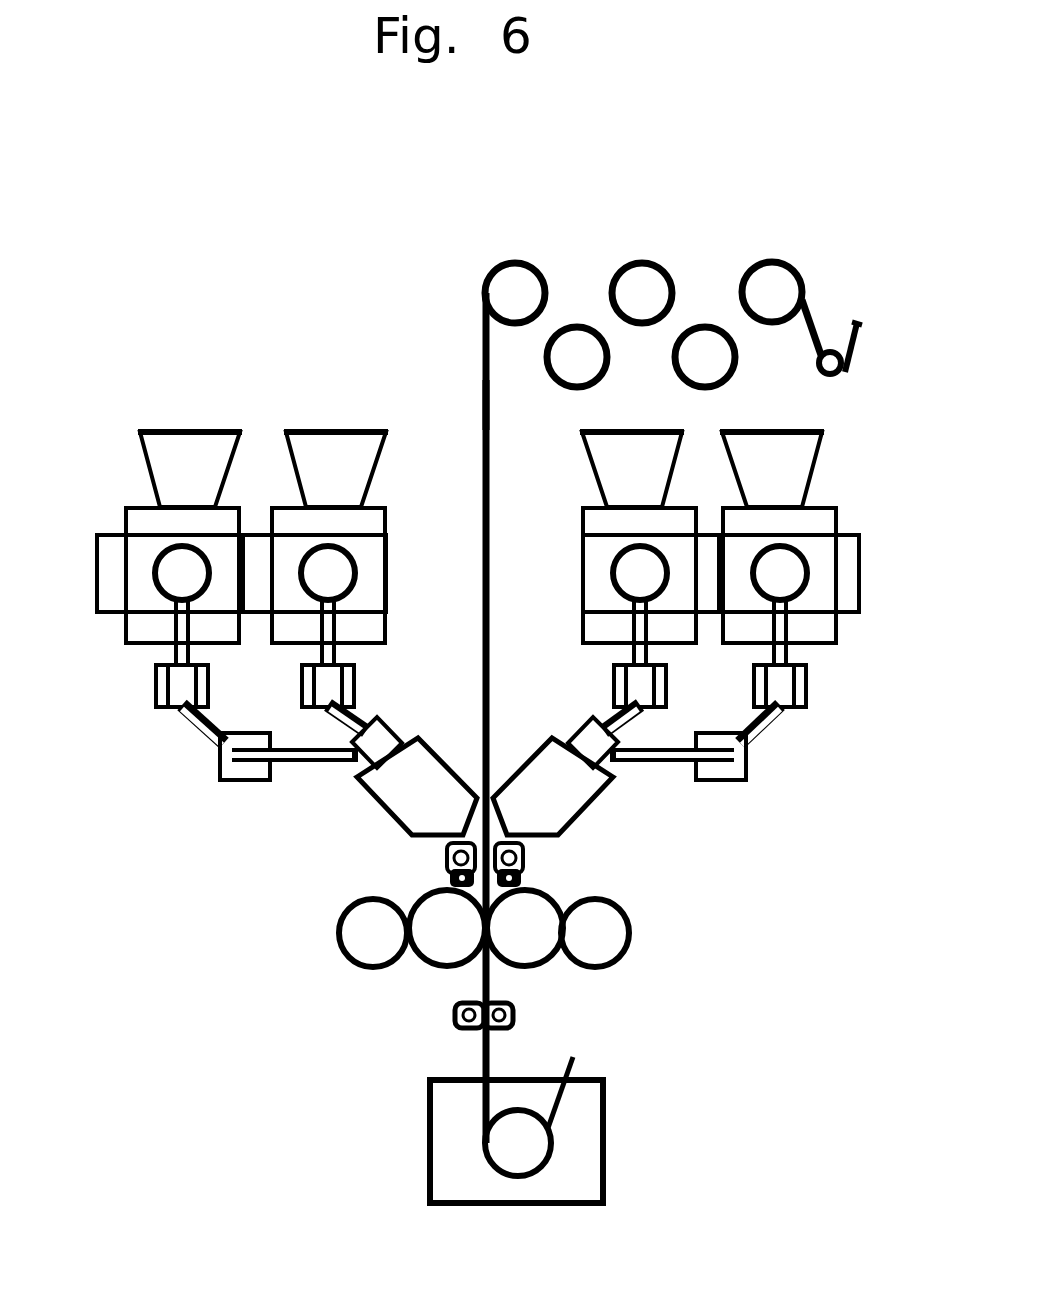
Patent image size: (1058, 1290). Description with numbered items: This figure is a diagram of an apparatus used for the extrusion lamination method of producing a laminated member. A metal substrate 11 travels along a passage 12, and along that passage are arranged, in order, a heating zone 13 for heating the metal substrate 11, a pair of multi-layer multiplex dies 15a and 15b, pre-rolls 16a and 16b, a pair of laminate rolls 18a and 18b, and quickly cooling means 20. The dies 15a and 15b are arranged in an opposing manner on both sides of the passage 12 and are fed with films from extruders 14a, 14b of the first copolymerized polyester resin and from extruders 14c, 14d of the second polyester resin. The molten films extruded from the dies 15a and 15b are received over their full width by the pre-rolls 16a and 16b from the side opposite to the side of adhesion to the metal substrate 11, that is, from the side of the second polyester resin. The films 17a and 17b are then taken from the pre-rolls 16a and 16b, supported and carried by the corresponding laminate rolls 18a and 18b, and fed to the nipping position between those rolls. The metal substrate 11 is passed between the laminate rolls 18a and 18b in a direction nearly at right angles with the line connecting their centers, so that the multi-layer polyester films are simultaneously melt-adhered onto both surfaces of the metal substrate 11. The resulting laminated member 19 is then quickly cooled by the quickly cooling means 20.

The metal substrate 11 is at (460, 393).
The passage 12 is at (519, 718).
The heating zone 13 is at (673, 295).
The extruder 14a is at (352, 581).
The extruder 14b is at (617, 581).
The extruder 14c is at (204, 606).
The extruder 14d is at (760, 606).
The multi-layer multiplex die 15a is at (381, 776).
The multi-layer multiplex die 15b is at (588, 776).
The pre-roll 16a is at (420, 856).
The pre-roll 16b is at (552, 856).
The film 17a is at (452, 881).
The film 17b is at (518, 880).
The laminate roll 18a is at (416, 974).
The laminate roll 18b is at (560, 972).
The laminated member 19 is at (456, 1057).
The quickly cooling means 20 is at (559, 1130).